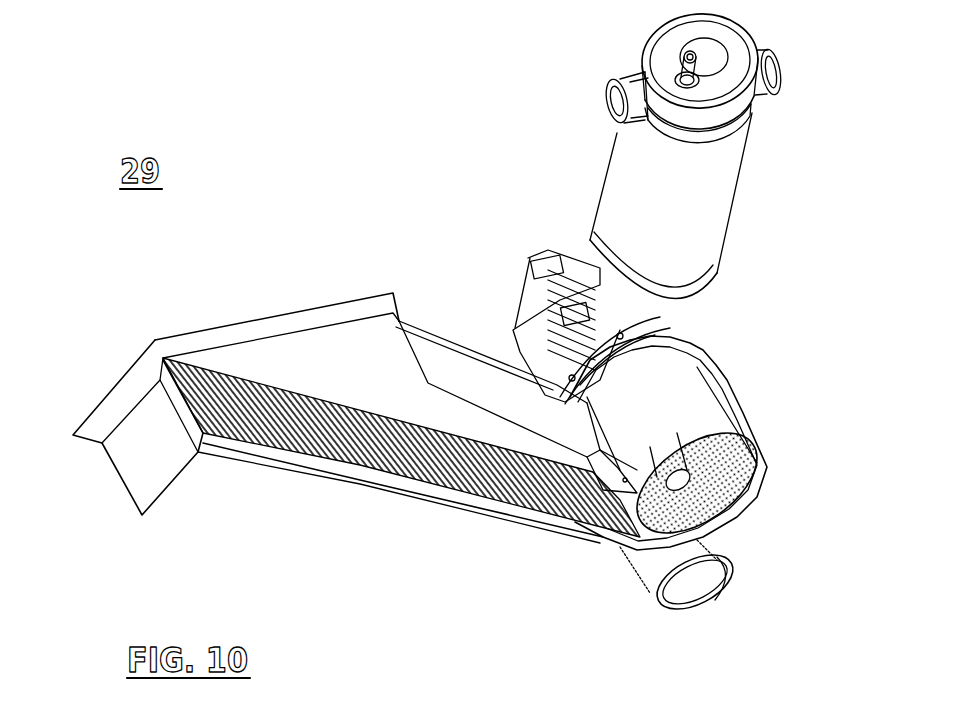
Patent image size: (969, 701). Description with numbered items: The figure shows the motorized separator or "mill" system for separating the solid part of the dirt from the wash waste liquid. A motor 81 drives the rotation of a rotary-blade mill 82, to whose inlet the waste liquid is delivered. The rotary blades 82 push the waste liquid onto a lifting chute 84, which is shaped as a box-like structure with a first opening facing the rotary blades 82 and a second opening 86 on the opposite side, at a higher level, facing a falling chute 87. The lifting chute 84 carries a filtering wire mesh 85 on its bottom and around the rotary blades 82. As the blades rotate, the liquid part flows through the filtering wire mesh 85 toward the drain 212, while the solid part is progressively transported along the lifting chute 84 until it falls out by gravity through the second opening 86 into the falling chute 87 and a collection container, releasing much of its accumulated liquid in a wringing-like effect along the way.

The motor 81 is at (713, 202).
The rotary-blade mill 82 is at (690, 447).
The lifting chute 84 is at (370, 352).
The filtering wire mesh 85 is at (617, 533).
The second opening 86 is at (300, 316).
The falling chute 87 is at (158, 447).
The drain 212 is at (690, 588).